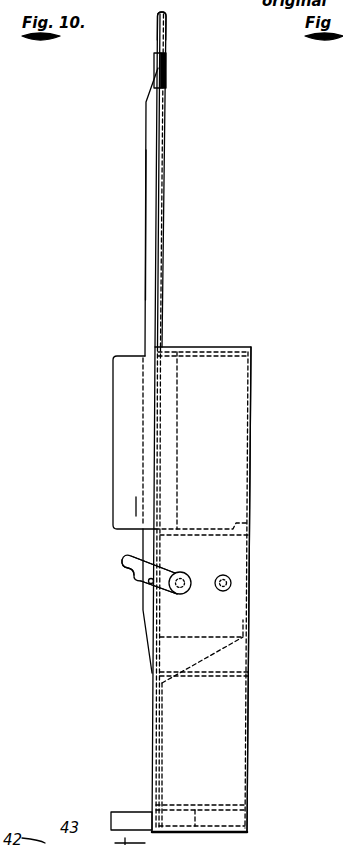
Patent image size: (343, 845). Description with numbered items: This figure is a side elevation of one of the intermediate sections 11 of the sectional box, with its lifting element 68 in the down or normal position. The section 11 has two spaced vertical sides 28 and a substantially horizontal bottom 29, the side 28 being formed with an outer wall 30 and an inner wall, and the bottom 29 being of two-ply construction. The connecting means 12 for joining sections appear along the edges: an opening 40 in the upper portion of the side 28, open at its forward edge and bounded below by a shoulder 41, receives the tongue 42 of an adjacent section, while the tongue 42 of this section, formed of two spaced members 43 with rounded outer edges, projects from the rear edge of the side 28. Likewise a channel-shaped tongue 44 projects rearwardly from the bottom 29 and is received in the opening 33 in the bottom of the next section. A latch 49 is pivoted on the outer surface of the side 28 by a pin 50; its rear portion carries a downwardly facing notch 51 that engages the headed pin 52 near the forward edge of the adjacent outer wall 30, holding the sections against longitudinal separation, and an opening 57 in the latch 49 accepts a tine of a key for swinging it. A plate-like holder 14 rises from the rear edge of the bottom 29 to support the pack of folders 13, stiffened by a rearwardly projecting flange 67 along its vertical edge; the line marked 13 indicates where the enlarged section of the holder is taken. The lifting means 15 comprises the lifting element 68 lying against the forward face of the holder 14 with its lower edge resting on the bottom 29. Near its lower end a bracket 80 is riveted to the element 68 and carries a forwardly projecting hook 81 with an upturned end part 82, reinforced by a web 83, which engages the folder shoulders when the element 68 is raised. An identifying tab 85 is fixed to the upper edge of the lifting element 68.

The intermediate section 11 is at (252, 553).
The connecting means 12 is at (116, 565).
The folder 13 is at (133, 506).
The holder 14 is at (153, 167).
The lifting means 15 is at (162, 167).
The side 28 is at (251, 462).
The bottom 29 is at (237, 805).
The outer wall 30 is at (196, 440).
The opening 33 is at (230, 826).
The opening 40 is at (232, 506).
The shoulder 41 is at (238, 524).
The tongue 42 is at (113, 438).
The tongue member 43 is at (115, 453).
The tongue 44 is at (130, 818).
The latch 49 is at (167, 566).
The pin 50 is at (187, 577).
The notch 51 is at (126, 578).
The headed pin 52 is at (232, 583).
The opening 57 is at (148, 585).
The flange 67 is at (150, 186).
The lifting element 68 is at (165, 150).
The bracket 80 is at (163, 700).
The hook 81 is at (213, 632).
The upturned end part 82 is at (246, 628).
The web 83 is at (215, 645).
The tab 85 is at (166, 29).